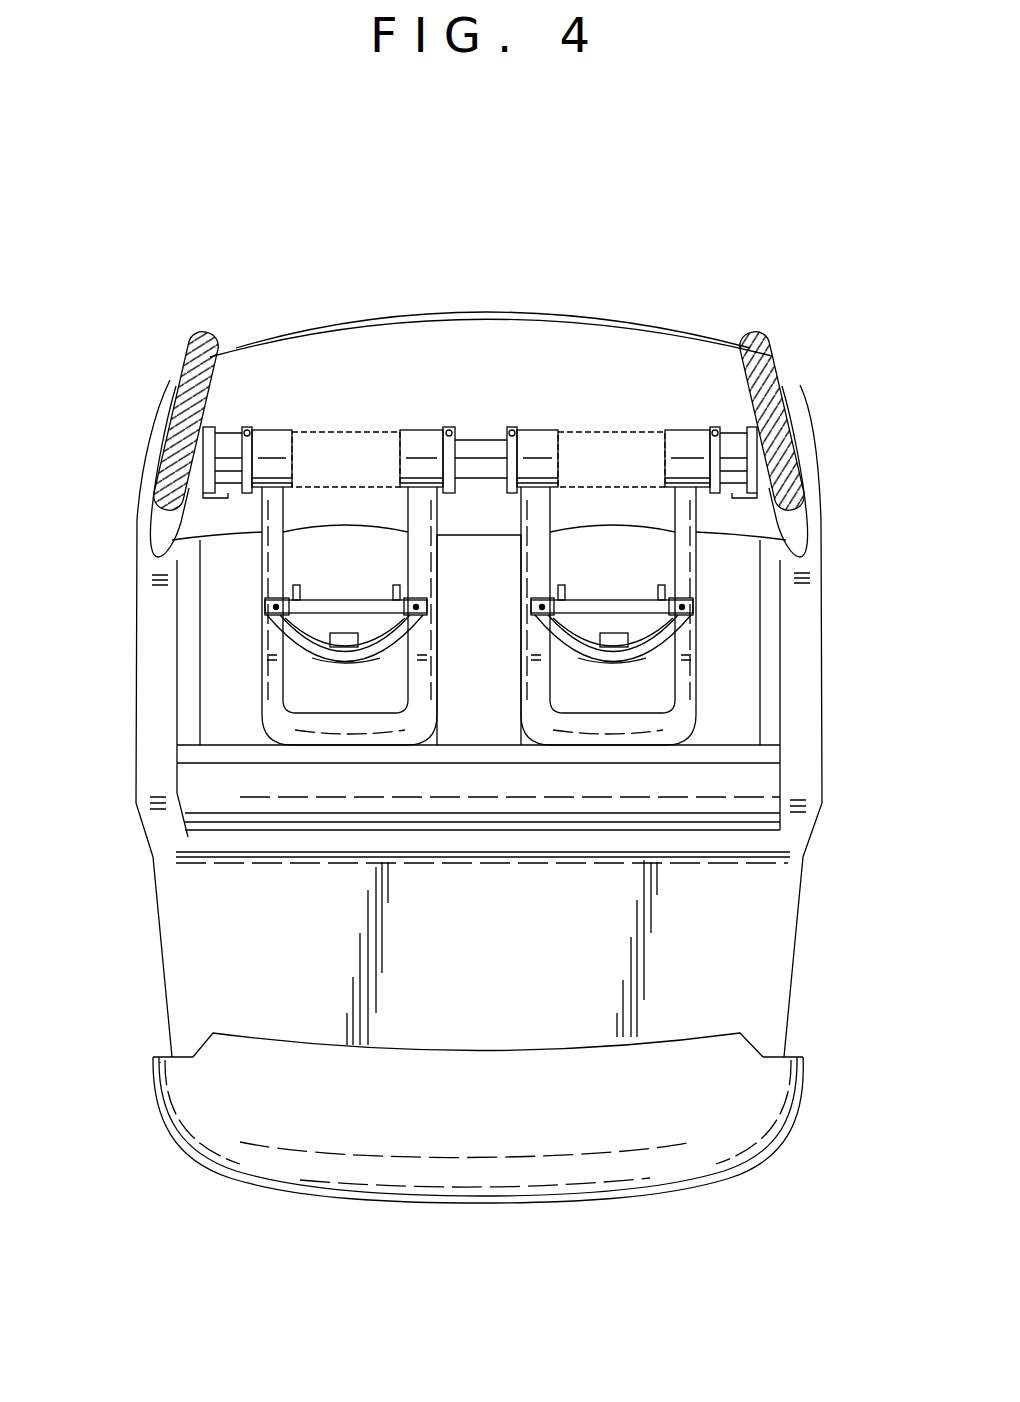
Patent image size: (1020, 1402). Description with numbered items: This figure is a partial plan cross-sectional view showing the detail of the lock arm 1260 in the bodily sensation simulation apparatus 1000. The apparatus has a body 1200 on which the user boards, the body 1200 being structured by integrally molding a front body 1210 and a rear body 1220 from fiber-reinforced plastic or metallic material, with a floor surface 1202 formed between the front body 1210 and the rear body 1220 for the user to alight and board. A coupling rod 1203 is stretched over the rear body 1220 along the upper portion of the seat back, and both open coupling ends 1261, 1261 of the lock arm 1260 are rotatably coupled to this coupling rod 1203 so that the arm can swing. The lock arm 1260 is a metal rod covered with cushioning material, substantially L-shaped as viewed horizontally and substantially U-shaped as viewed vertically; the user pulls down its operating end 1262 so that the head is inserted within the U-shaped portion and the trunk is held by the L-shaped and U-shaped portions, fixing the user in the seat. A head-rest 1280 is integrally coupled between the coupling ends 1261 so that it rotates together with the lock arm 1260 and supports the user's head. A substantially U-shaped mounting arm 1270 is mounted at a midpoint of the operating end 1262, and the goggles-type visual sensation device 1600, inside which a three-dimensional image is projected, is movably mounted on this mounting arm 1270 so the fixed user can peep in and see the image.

The bodily sensation simulation apparatus 1000 is at (742, 310).
The body 1200 is at (300, 1207).
The floor surface 1202 is at (776, 930).
The coupling rod 1203 is at (482, 448).
The front body 1210 is at (748, 1122).
The rear body 1220 is at (243, 358).
The lock arm 1260 is at (252, 675).
The coupling end 1261 is at (270, 446).
The operating end 1262 is at (265, 638).
The mounting arm 1270 is at (265, 607).
The head-rest 1280 is at (350, 440).
The visual sensation device 1600 is at (316, 682).